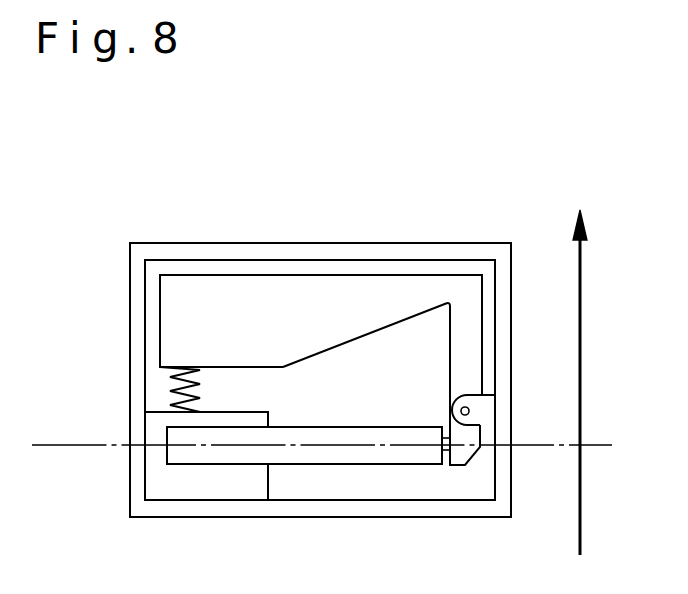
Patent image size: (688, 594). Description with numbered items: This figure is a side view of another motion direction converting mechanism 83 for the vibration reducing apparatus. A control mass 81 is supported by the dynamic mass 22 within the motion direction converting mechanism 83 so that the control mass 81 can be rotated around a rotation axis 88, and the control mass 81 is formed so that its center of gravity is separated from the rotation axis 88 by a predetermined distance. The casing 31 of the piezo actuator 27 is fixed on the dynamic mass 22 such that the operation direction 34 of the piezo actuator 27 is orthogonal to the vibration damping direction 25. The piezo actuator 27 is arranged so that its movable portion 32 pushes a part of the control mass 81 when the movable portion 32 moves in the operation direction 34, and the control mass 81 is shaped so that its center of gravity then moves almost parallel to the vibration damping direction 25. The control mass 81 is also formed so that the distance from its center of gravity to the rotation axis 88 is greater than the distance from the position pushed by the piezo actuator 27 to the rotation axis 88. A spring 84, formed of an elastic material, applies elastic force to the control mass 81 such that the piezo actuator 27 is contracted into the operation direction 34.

The dynamic mass 22 is at (451, 243).
The vibration damping direction 25 is at (583, 273).
The piezo actuator 27 is at (308, 396).
The casing 31 is at (353, 427).
The movable portion 32 is at (432, 411).
The operation direction 34 is at (60, 443).
The control mass 81 is at (267, 280).
The motion direction converting mechanism 83 is at (480, 488).
The spring 84 is at (170, 384).
The rotation axis 88 is at (470, 411).